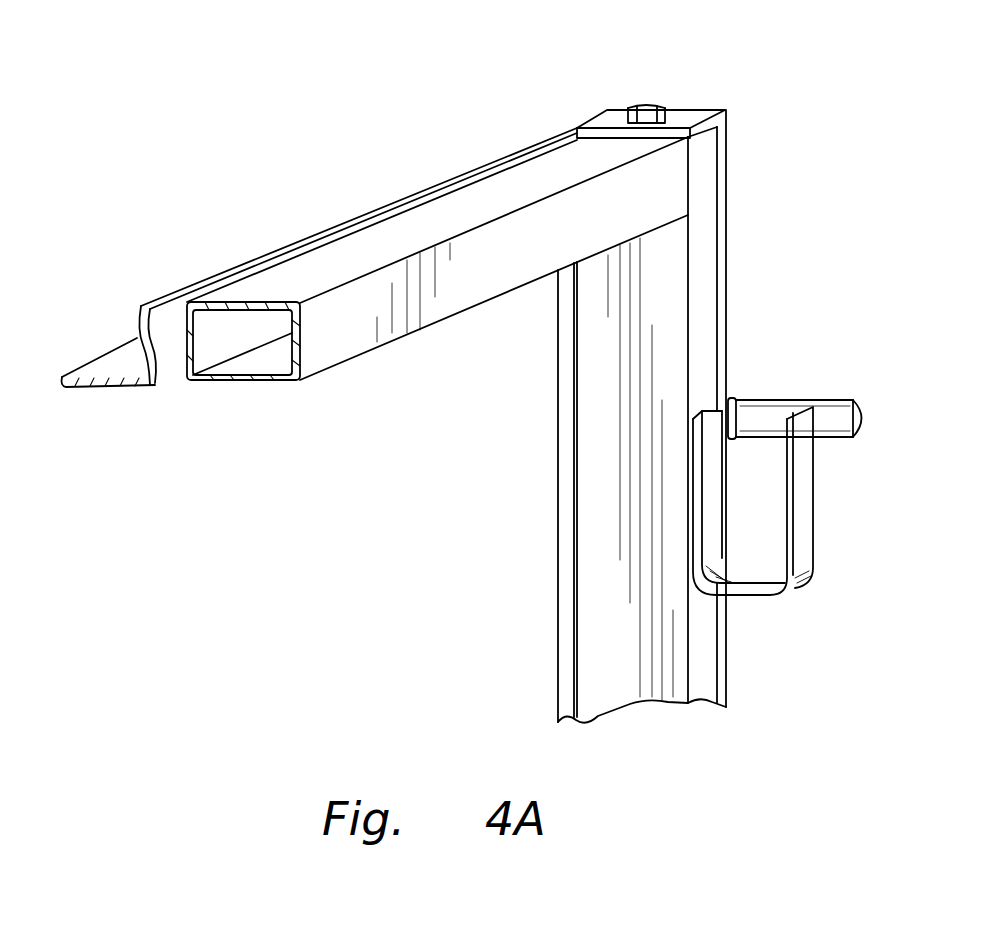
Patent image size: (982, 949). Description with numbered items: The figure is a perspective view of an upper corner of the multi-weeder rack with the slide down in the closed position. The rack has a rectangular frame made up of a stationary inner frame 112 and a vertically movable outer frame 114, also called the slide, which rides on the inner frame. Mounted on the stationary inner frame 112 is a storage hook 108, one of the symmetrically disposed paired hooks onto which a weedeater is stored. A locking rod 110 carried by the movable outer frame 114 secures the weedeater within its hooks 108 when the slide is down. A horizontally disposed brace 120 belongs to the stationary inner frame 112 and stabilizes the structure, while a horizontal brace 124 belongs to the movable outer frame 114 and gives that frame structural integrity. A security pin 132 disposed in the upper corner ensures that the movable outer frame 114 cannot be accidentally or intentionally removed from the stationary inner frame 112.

The storage hook 108 is at (808, 532).
The locking rod 110 is at (773, 403).
The stationary inner frame 112 is at (592, 560).
The vertically movable outer frame 114 is at (692, 118).
The horizontal brace 120 is at (323, 352).
The horizontal brace 124 is at (121, 363).
The security pin 132 is at (649, 106).